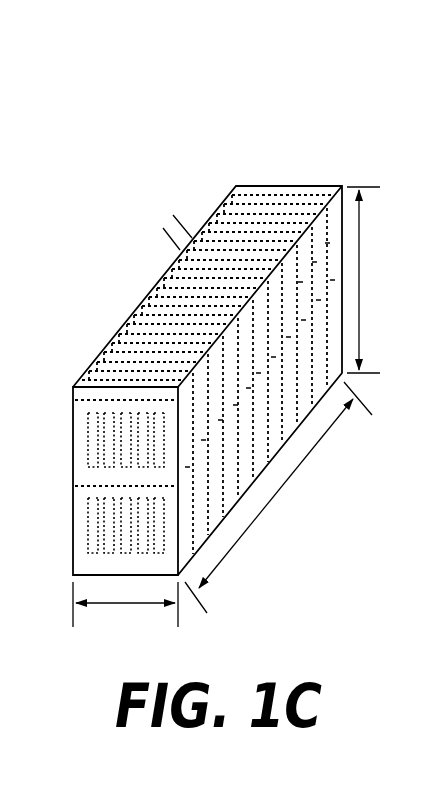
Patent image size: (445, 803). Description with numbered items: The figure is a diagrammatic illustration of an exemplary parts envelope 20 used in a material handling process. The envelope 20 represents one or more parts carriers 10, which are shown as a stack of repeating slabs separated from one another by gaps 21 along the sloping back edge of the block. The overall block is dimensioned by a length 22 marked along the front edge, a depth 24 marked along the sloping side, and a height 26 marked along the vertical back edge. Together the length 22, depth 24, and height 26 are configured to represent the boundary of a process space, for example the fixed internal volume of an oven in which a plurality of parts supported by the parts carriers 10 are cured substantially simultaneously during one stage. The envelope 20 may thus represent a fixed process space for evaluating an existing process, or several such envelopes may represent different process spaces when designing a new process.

The parts carrier 10 is at (198, 548).
The envelope 20 is at (279, 169).
The gap 21 is at (147, 263).
The length 22 is at (125, 606).
The depth 24 is at (285, 482).
The height 26 is at (361, 287).